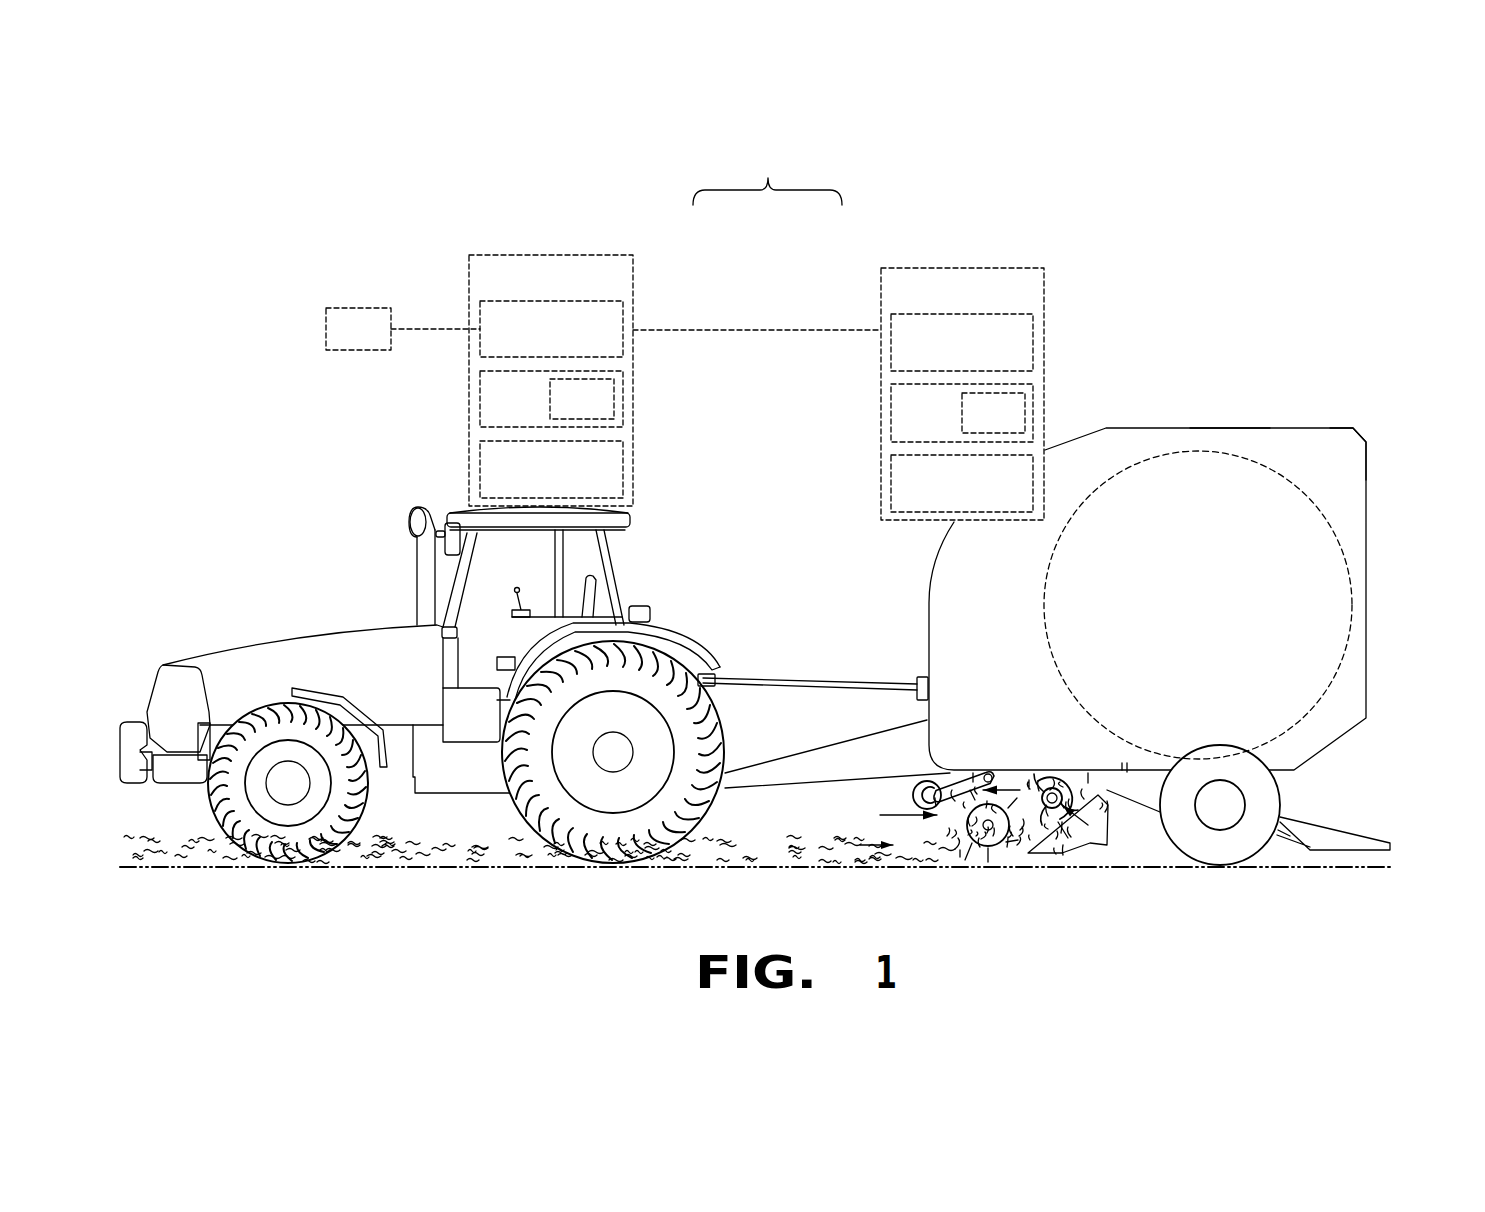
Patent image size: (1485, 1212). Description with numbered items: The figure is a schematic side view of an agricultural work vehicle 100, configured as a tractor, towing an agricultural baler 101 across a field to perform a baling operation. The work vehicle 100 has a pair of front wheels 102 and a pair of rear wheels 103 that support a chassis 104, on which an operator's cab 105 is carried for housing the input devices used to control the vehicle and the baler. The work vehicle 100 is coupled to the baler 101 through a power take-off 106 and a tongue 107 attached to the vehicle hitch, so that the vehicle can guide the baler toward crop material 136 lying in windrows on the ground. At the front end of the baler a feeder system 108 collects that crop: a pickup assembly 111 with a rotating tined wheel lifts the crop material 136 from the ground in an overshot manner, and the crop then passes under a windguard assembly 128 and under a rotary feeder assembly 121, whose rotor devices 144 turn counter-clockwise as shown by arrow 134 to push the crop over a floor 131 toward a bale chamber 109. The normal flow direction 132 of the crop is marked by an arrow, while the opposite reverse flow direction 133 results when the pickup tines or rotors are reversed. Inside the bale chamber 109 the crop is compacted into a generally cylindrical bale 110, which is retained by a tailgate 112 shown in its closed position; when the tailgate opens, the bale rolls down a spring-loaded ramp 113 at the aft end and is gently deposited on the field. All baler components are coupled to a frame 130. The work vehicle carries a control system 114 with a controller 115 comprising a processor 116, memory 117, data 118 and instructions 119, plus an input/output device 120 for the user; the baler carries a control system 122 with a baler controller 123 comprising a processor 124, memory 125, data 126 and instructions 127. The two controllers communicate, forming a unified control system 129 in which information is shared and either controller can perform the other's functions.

The work vehicle 100 is at (267, 600).
The agricultural baler 101 is at (1131, 617).
The front wheels 102 is at (217, 798).
The rear wheels 103 is at (710, 805).
The chassis 104 is at (437, 792).
The operator's cab 105 is at (493, 537).
The power take-off 106 is at (770, 678).
The tongue 107 is at (800, 753).
The feeder system 108 is at (926, 808).
The bale chamber 109 is at (1243, 447).
The bale 110 is at (1331, 524).
The pickup assembly 111 is at (983, 837).
The tailgate 112 is at (1353, 428).
The ramp 113 is at (1360, 833).
The control system 114 is at (613, 352).
The controller 115 is at (551, 380).
The processor 116 is at (492, 345).
The memory 117 is at (489, 413).
The data 118 is at (557, 413).
The instructions 119 is at (492, 483).
The input/output device 120 is at (334, 343).
The rotary feeder assembly 121 is at (1073, 813).
The control system 122 is at (915, 367).
The baler controller 123 is at (962, 394).
The processor 124 is at (905, 360).
The memory 125 is at (899, 428).
The data 126 is at (967, 428).
The instructions 127 is at (905, 500).
The windguard assembly 128 is at (920, 783).
The unified control system 129 is at (767, 171).
The frame 130 is at (1127, 763).
The floor 131 is at (1063, 827).
The flow direction 132 is at (868, 850).
The reverse flow direction 133 is at (1002, 770).
The arrow 134 is at (1050, 772).
The crop material 136 is at (413, 853).
The rotor devices 144 is at (1067, 780).